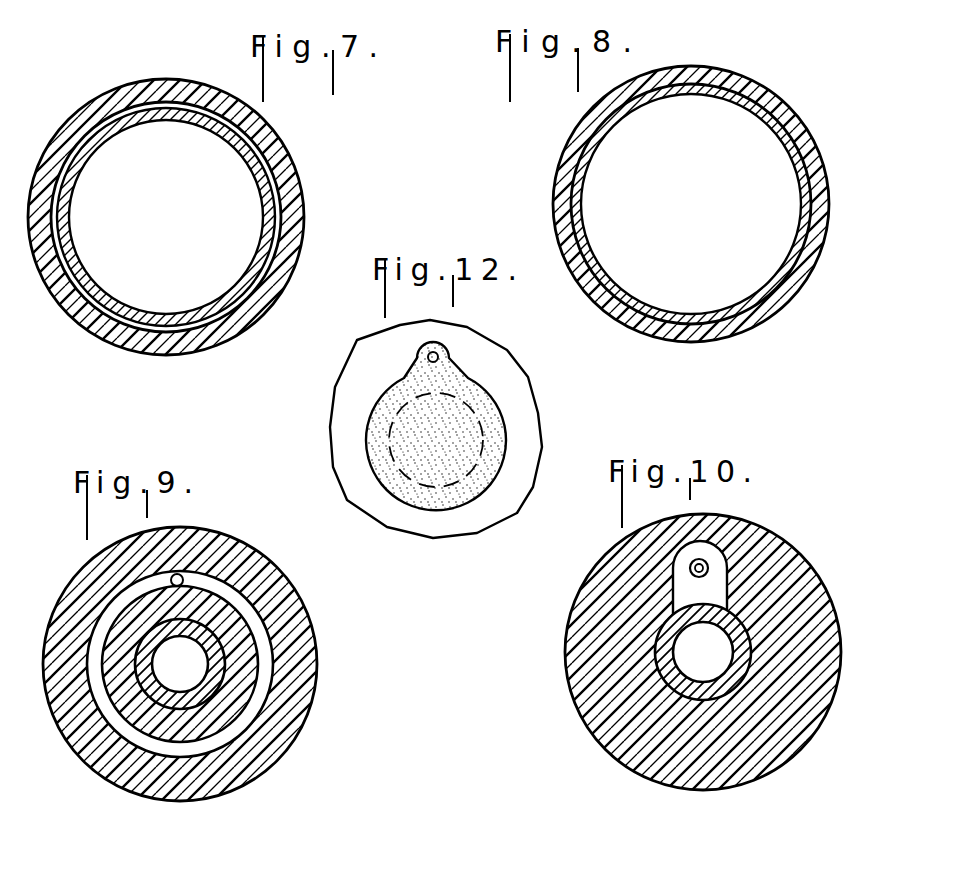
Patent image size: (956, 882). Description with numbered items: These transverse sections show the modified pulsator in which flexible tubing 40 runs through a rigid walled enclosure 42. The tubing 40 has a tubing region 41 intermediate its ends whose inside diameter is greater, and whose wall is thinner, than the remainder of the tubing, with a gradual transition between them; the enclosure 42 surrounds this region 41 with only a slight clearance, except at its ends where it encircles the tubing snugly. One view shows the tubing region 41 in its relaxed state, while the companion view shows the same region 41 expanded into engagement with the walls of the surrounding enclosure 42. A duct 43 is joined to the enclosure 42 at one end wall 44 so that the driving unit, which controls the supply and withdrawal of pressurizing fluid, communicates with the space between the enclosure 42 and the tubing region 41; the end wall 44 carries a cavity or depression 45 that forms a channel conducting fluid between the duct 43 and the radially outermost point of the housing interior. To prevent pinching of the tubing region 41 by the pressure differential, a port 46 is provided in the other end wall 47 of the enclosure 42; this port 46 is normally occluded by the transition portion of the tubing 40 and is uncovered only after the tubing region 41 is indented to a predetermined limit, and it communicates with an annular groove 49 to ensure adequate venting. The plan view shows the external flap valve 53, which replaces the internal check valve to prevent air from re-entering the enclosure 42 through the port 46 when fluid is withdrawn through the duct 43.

In FIG. 9, the flexible tubing 40 is at (205, 692).
In FIG. 10, the flexible tubing 40 is at (657, 638).
In FIG. 7, the tubing region 41 is at (258, 183).
In FIG. 8, the tubing region 41 is at (580, 190).
In FIG. 7, the rigid walled enclosure 42 is at (300, 202).
In FIG. 8, the rigid walled enclosure 42 is at (567, 143).
In FIG. 10, the duct 43 is at (697, 560).
In FIG. 10, the end wall 44 is at (817, 592).
In FIG. 10, the cavity or depression 45 is at (720, 558).
In FIG. 9, the port 46 is at (186, 576).
In FIG. 12, the end wall 47 is at (525, 460).
In FIG. 9, the end wall 47 is at (302, 643).
In FIG. 9, the annular groove 49 is at (263, 690).
In FIG. 12, the external flap valve 53 is at (505, 418).